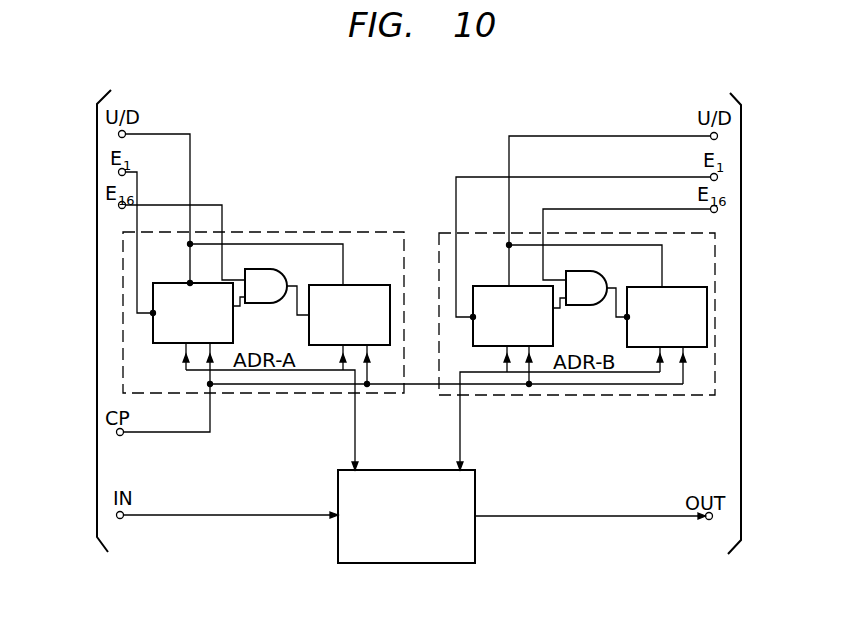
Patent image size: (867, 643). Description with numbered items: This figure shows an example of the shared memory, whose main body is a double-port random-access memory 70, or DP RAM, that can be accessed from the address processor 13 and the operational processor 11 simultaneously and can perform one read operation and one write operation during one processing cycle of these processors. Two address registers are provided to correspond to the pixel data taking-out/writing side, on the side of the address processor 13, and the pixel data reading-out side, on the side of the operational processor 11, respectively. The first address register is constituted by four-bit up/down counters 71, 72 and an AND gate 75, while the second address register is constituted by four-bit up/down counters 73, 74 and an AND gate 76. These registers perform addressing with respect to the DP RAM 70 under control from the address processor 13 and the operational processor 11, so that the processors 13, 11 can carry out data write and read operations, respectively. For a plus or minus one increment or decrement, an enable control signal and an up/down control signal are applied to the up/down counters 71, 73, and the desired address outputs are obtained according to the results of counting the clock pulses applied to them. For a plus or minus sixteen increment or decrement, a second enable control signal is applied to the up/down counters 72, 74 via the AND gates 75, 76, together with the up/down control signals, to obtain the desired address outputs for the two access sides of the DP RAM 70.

The address processor 13 is at (97, 136).
The operational processor 11 is at (741, 139).
The four-bit up/down counter 71 is at (175, 282).
The four-bit up/down counter 72 is at (362, 283).
The four-bit up/down counter 73 is at (495, 284).
The four-bit up/down counter 74 is at (678, 286).
The AND gate 75 is at (286, 278).
The AND gate 76 is at (606, 280).
The double-port random-access memory 70 is at (476, 491).